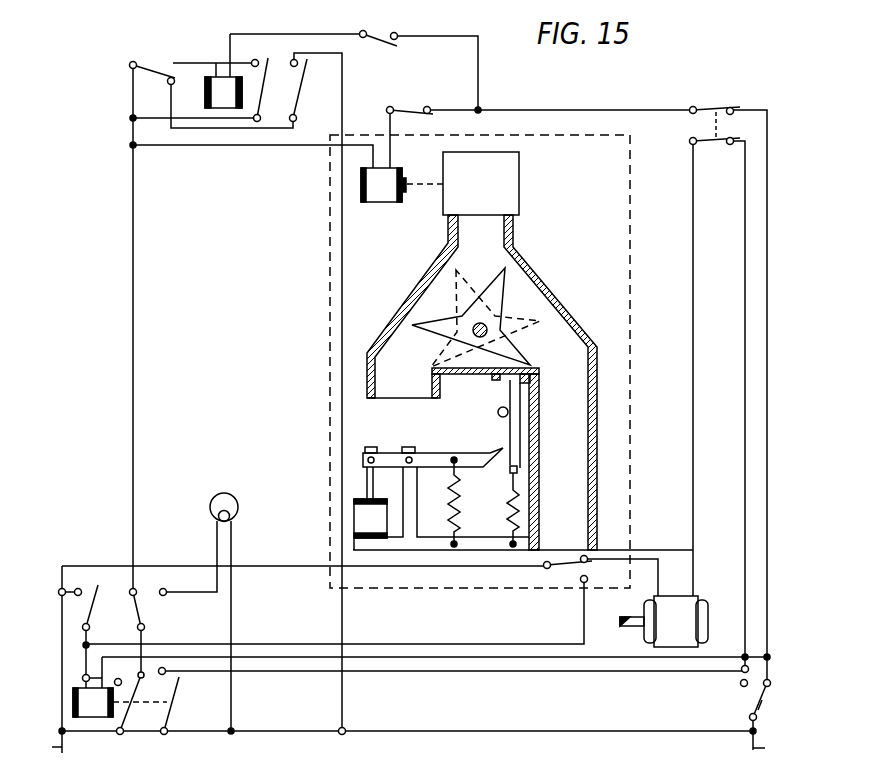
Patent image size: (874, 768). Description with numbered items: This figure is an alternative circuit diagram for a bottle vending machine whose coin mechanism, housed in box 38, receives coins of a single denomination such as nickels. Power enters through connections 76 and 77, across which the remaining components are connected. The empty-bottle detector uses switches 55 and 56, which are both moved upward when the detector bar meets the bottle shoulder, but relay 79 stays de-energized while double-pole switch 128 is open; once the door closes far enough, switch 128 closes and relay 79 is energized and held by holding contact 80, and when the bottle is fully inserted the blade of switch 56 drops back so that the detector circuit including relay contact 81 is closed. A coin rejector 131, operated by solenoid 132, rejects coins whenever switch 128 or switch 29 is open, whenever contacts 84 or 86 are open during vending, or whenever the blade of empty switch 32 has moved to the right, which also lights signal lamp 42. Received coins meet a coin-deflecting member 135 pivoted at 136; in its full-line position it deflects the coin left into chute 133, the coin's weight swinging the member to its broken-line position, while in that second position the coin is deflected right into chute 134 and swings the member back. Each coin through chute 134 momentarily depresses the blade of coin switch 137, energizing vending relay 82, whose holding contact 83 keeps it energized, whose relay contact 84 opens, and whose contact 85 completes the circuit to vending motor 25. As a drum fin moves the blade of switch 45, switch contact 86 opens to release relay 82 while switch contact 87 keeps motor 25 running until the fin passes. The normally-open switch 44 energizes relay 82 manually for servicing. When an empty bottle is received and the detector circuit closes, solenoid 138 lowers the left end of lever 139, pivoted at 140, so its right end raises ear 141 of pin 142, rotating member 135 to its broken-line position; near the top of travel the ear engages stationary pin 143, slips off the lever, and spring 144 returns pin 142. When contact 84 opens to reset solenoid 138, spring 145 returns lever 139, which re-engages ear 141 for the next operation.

The vending motor 25 is at (695, 598).
The switch 29 is at (405, 108).
The empty switch 32 is at (143, 611).
The box 38 is at (631, 135).
The signal lamp 42 is at (239, 497).
The normally-open switch 44 is at (92, 610).
The switch 45 is at (761, 708).
The switch 55 is at (380, 27).
The switch 56 is at (150, 70).
The connection 76 is at (45, 749).
The connection 77 is at (770, 751).
The relay 79 is at (205, 77).
The holding contact 80 is at (255, 62).
The relay contact 81 is at (291, 63).
The vending relay 82 is at (95, 715).
The holding contact 83 is at (124, 676).
The relay contact 84 is at (136, 678).
The contact 85 is at (162, 674).
The switch contact 86 is at (771, 683).
The switch contact 87 is at (742, 684).
The double-pole switch 128 is at (705, 108).
The coin rejector 131 is at (520, 190).
The solenoid 132 is at (373, 202).
The coin chute 133 is at (367, 395).
The coin chute 134 is at (594, 431).
The coin-deflecting member 135 is at (493, 280).
The pivot 136 is at (498, 336).
The coin switch 137 is at (557, 567).
The solenoid 138 is at (354, 512).
The lever 139 is at (391, 452).
The pivot 140 is at (416, 456).
The ear 141 is at (503, 449).
The pin 142 is at (511, 393).
The stationary pin 143 is at (498, 412).
The spring 144 is at (509, 497).
The spring 145 is at (450, 497).